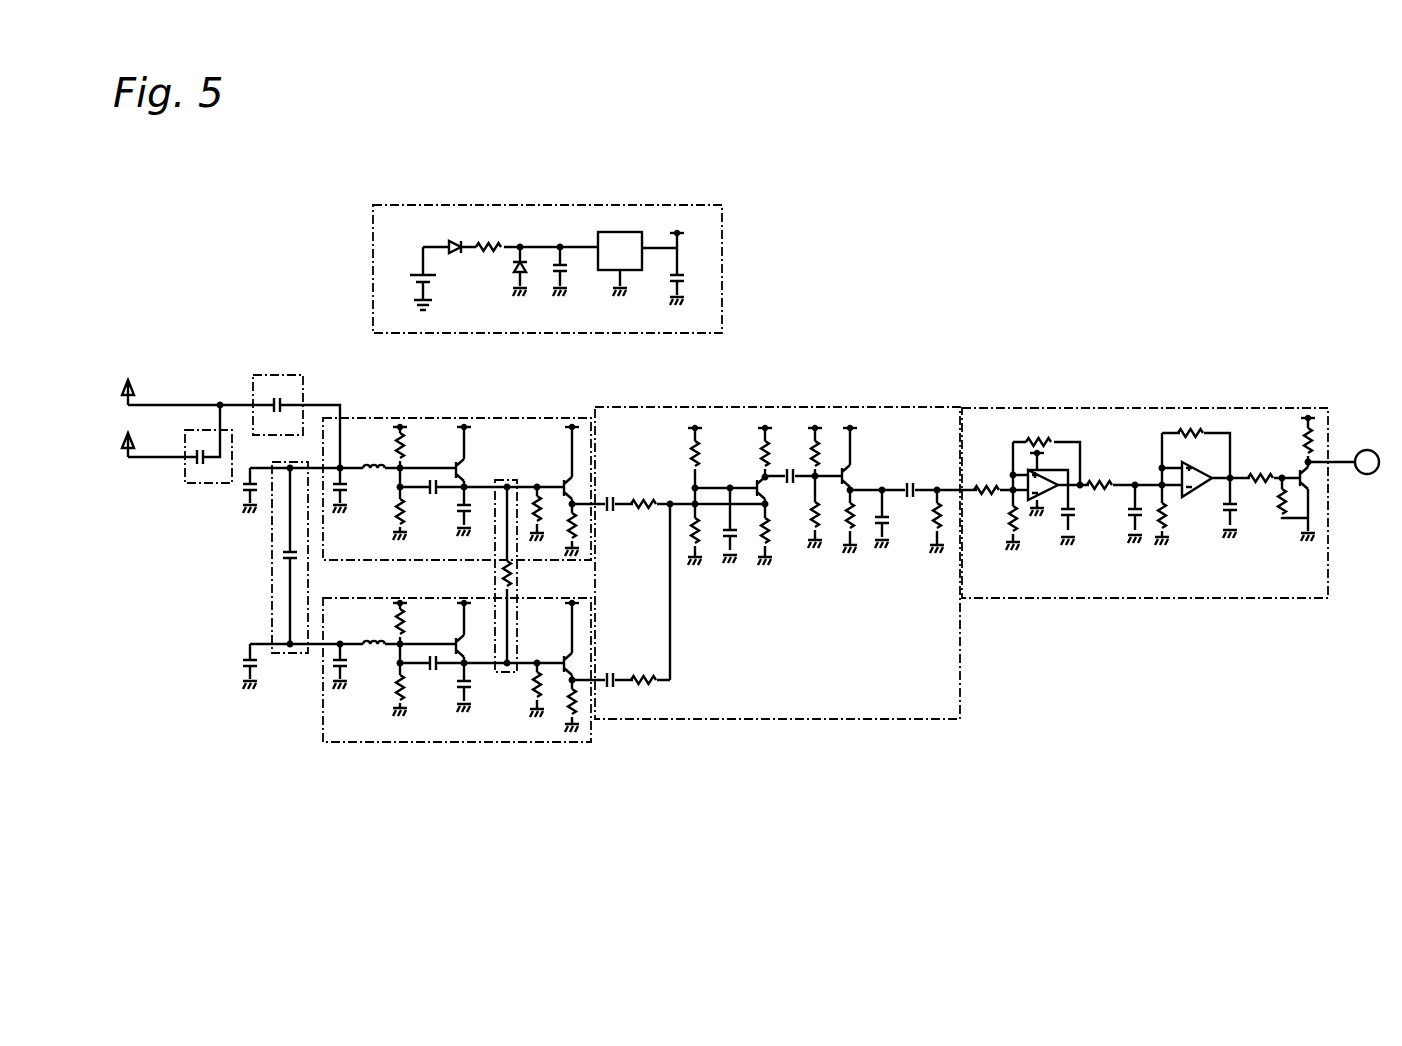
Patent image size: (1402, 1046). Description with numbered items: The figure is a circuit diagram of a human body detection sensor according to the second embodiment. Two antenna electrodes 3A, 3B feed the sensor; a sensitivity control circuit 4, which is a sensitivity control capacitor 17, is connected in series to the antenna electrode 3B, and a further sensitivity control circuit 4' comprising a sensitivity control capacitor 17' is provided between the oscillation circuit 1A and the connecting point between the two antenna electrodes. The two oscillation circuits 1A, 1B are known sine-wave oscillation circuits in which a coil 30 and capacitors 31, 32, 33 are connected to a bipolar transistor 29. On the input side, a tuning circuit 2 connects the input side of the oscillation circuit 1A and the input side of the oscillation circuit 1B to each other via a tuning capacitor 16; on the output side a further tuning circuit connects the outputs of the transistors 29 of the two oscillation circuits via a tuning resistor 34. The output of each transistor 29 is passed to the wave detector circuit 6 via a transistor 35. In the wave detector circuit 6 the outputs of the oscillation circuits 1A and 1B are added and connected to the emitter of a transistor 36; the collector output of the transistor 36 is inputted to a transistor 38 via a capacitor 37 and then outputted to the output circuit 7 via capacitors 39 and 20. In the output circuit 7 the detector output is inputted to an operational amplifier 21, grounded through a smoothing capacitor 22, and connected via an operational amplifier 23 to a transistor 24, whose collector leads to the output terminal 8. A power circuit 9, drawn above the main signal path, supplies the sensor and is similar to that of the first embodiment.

The power circuit 9 is at (373, 245).
The antenna electrode 3A is at (127, 378).
The antenna electrode 3B is at (127, 450).
The sensitivity control capacitor 17 is at (174, 473).
The sensitivity control circuit 4 is at (208, 478).
The sensitivity control circuit 4' is at (278, 383).
The sensitivity control capacitor 17' is at (306, 389).
The oscillation circuit 1A is at (392, 418).
The oscillation circuit 1B is at (385, 598).
The tuning circuit 2 is at (270, 552).
The tuning capacitor 16 is at (285, 563).
The coil 30 is at (374, 466).
The bipolar transistor 29 is at (453, 466).
The transistor 35 is at (560, 480).
The capacitor 31 is at (346, 493).
The capacitor 32 is at (431, 492).
The capacitor 33 is at (458, 516).
The tuning resistor 34 is at (512, 576).
The wave detector circuit 6 is at (628, 407).
The transistor 36 is at (755, 478).
The capacitor 37 is at (790, 486).
The transistor 38 is at (848, 478).
The capacitor 20 is at (914, 484).
The capacitor 39 is at (889, 531).
The output circuit 7 is at (1001, 408).
The operational amplifier 21 is at (1054, 506).
The smoothing capacitor 22 is at (1130, 525).
The operational amplifier 23 is at (1194, 505).
The transistor 24 is at (1297, 476).
The output terminal 8 is at (1367, 450).